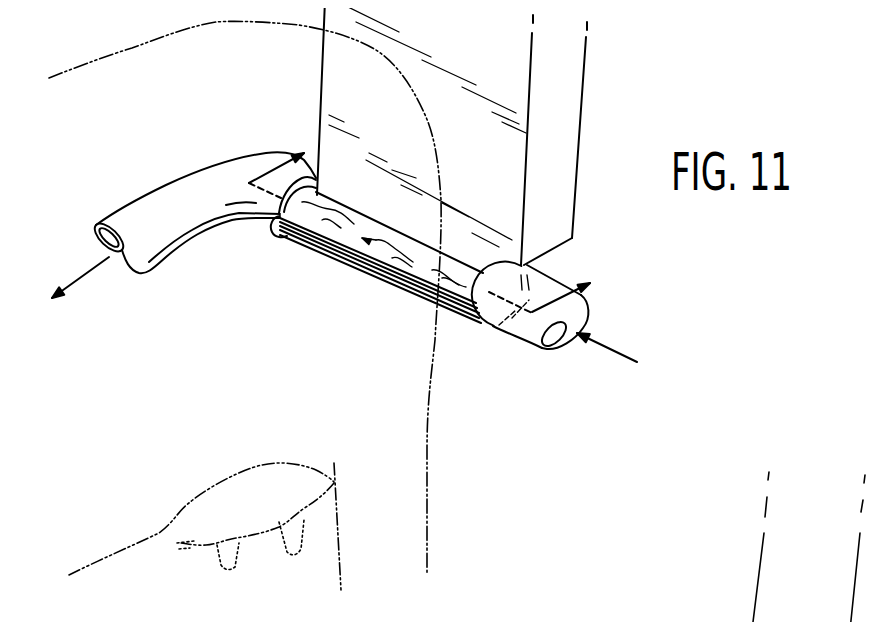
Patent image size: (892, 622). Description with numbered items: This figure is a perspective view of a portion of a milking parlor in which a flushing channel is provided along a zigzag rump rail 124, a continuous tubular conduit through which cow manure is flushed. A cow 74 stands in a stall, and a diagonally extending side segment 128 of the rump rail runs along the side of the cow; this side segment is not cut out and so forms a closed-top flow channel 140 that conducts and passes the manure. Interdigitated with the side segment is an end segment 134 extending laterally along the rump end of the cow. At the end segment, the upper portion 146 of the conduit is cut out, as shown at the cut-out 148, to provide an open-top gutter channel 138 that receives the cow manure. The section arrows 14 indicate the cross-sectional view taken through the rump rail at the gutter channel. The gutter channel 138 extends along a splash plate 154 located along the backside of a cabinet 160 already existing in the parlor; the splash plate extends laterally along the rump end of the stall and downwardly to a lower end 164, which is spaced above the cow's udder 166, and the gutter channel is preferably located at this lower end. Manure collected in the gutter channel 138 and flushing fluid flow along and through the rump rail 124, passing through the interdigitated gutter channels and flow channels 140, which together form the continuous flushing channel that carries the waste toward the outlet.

The cow 74 is at (130, 44).
The zigzag rump rail 124 is at (85, 224).
The side segment 128 is at (145, 196).
The flow channel 140 is at (157, 260).
The cut-out 148 is at (318, 191).
The gutter channel 138 is at (307, 196).
The end segment 134 is at (515, 338).
The lower end of splash plate 164 is at (524, 265).
The section line 14 is at (443, 244).
The upper portion of conduit 146 is at (315, 168).
The splash plate 154 is at (517, 83).
The cabinet 160 is at (578, 58).
The cow's udder 166 is at (205, 537).